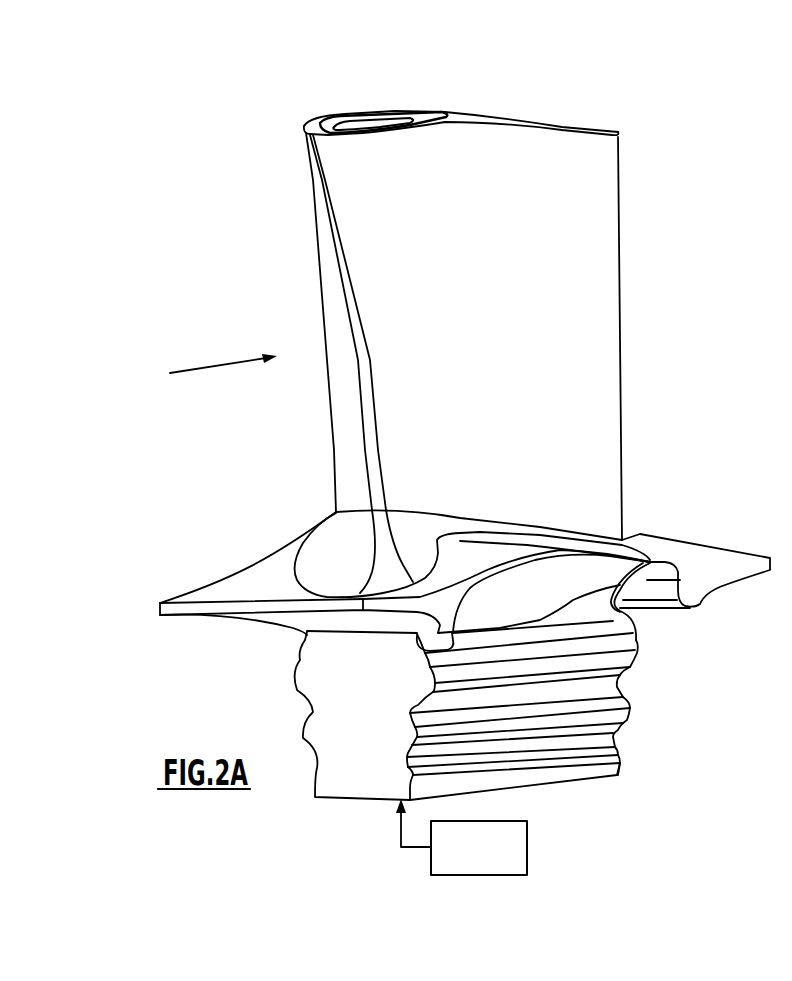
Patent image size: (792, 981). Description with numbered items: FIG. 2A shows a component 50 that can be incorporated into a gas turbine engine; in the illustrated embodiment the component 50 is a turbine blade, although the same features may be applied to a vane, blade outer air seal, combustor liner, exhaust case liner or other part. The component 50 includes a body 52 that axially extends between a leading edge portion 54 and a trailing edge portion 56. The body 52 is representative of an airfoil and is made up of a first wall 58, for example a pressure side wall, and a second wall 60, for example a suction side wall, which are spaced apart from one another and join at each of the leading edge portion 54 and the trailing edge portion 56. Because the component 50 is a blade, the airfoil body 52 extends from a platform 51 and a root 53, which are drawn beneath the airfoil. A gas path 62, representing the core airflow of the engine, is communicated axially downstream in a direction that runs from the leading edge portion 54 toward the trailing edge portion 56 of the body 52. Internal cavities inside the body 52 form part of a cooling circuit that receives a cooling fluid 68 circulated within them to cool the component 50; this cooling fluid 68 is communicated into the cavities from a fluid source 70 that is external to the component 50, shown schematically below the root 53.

The component 50 is at (522, 101).
The platform 51 is at (717, 562).
The body 52 is at (484, 307).
The root 53 is at (628, 663).
The leading edge portion 54 is at (338, 335).
The trailing edge portion 56 is at (622, 346).
The first wall 58 is at (397, 411).
The second wall 60 is at (316, 237).
The gas path 62 is at (215, 372).
The cooling fluid 68 is at (400, 832).
The fluid source 70 is at (528, 840).